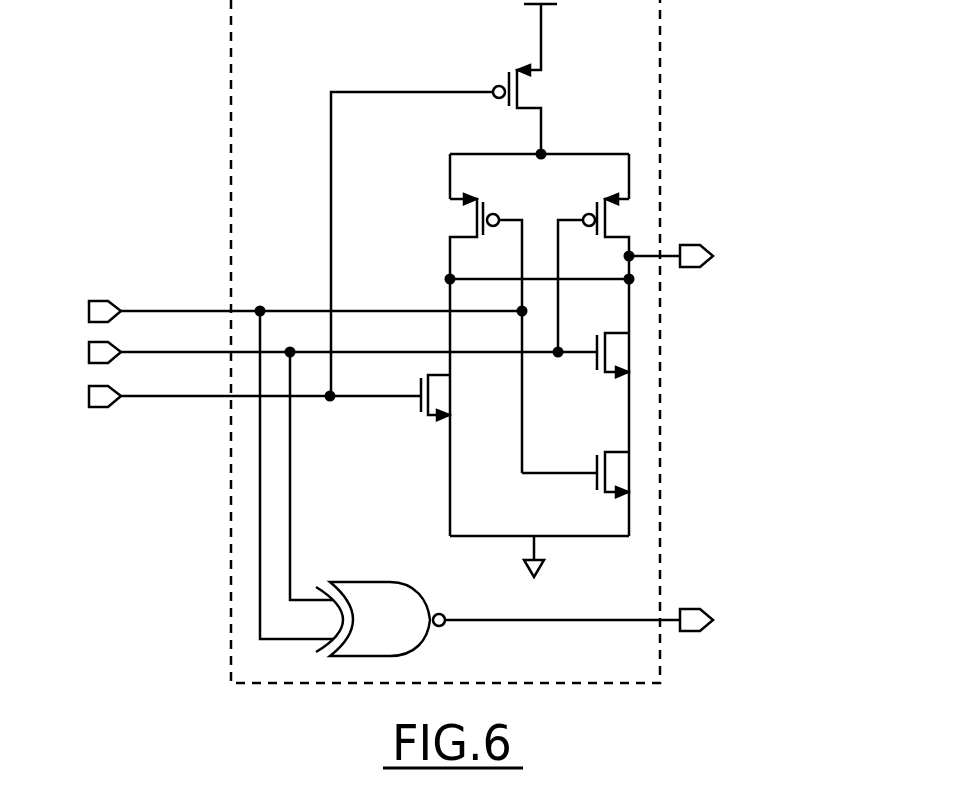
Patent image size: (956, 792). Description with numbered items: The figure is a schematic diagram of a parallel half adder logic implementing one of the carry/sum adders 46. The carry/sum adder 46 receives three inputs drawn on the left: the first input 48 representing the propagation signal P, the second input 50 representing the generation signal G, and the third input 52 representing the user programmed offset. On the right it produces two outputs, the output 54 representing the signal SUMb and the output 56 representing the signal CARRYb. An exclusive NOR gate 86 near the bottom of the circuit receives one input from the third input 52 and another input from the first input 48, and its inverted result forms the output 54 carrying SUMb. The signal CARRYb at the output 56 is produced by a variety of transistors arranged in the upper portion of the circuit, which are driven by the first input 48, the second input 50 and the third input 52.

The carry/sum adder 46 is at (660, 126).
The first input 48 is at (189, 351).
The second input 50 is at (175, 399).
The third input 52 is at (162, 306).
The output 54 is at (667, 620).
The output 56 is at (665, 256).
The exclusive NOR gate 86 is at (413, 578).